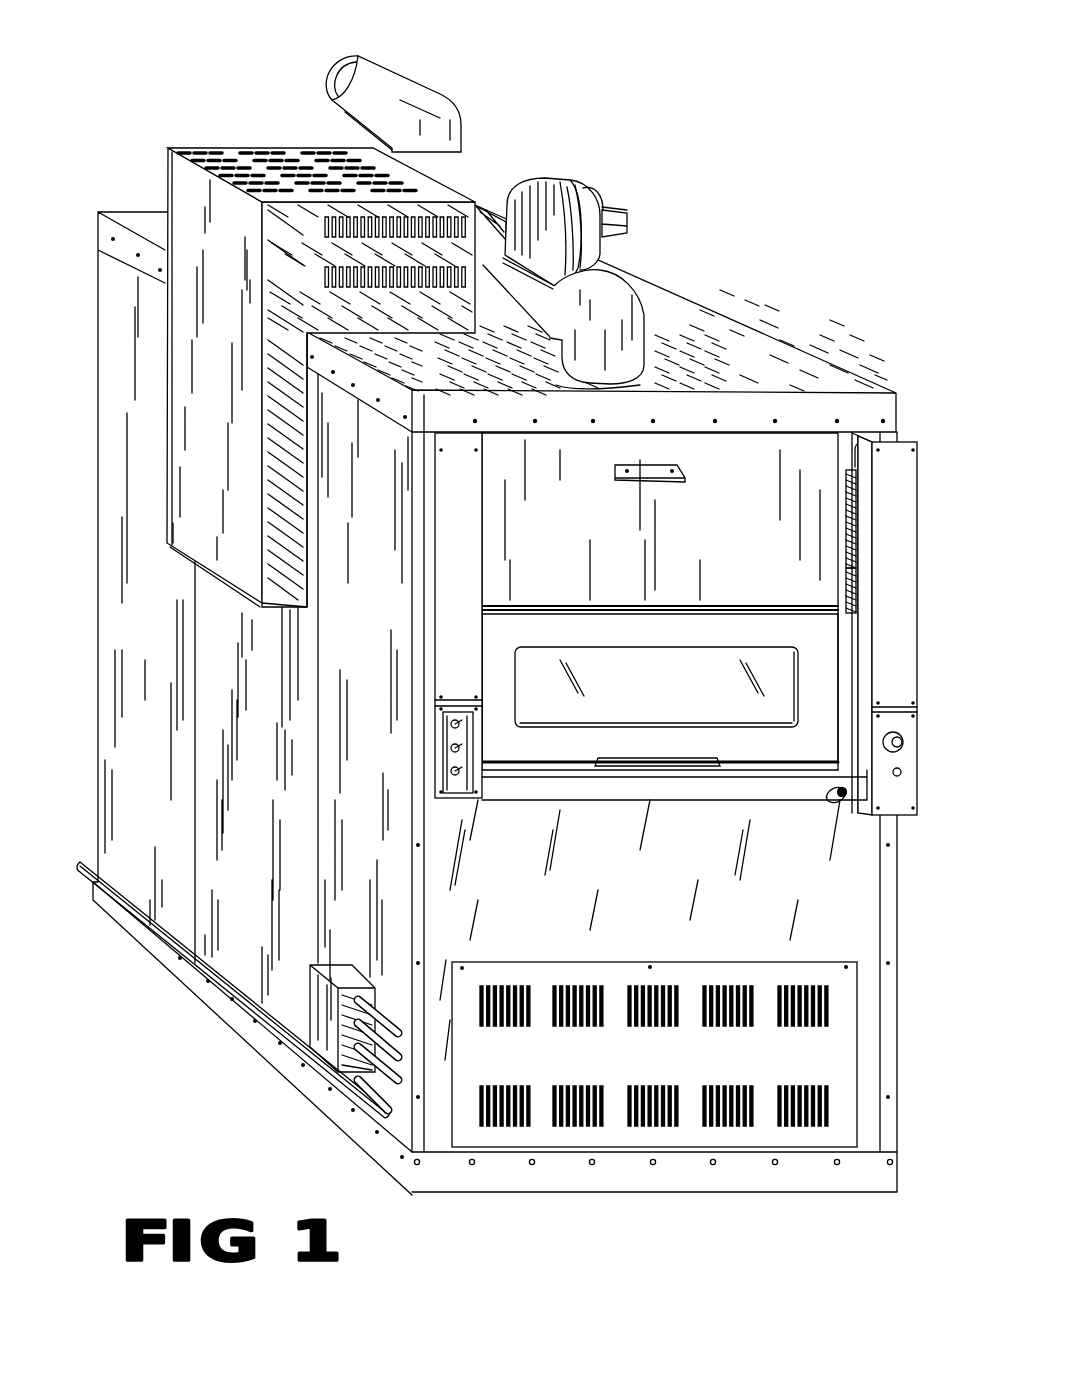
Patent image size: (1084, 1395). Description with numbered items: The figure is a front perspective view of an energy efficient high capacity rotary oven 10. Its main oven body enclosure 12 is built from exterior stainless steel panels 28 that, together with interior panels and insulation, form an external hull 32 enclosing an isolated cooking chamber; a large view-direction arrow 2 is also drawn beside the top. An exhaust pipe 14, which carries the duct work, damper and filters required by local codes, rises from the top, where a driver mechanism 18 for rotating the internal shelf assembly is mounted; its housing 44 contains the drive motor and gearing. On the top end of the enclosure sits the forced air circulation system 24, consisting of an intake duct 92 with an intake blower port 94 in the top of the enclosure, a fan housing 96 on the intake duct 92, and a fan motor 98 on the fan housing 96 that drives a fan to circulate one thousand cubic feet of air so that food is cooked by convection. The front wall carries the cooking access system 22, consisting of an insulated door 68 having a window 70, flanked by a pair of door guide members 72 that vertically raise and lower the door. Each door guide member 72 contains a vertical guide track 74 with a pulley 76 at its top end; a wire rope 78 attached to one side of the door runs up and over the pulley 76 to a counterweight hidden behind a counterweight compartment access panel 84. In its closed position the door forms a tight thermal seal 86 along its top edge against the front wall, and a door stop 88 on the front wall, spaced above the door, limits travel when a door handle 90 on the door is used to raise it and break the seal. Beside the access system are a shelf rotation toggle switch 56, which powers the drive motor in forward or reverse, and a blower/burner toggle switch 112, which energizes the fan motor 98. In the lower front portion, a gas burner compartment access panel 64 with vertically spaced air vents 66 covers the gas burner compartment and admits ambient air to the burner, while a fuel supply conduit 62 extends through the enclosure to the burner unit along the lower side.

The energy efficient high capacity rotary oven 10 is at (684, 194).
The viewing direction arrow 2 is at (820, 295).
The main oven body enclosure 12 is at (96, 431).
The exhaust pipe 14 is at (369, 88).
The driver mechanism 18 is at (257, 138).
The cooking access system 22 is at (696, 595).
The forced air circulation system 24 is at (518, 176).
The exterior stainless steel panels 28 is at (128, 768).
The external hull 32 is at (88, 638).
The housing 44 is at (185, 195).
The shelf rotation toggle switch 56 is at (470, 786).
The fuel supply conduit 62 is at (224, 978).
The gas burner compartment access panel 64 is at (690, 970).
The air vents 66 is at (683, 1108).
The insulated door 68 is at (534, 620).
The window 70 is at (603, 676).
The door guide members 72 is at (903, 424).
The vertical guide track 74 is at (850, 572).
The pulley 76 is at (845, 449).
The wire rope 78 is at (848, 515).
The counterweight compartment access panel 84 is at (473, 542).
The thermal seal 86 is at (600, 604).
The door stop 88 is at (687, 478).
The door handle 90 is at (690, 758).
The intake duct 92 is at (617, 295).
The intake blower port 94 is at (617, 382).
The fan housing 96 is at (566, 180).
The fan motor 98 is at (604, 204).
The blower/burner toggle switch 112 is at (472, 742).